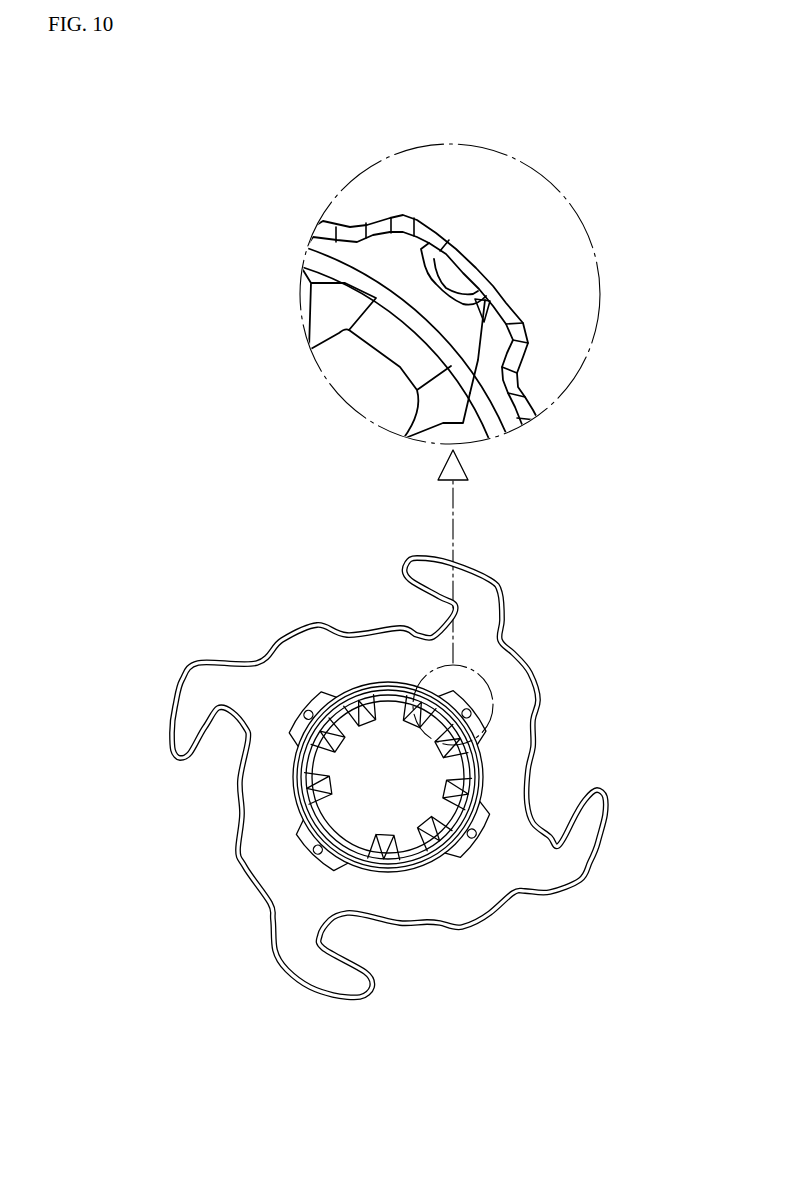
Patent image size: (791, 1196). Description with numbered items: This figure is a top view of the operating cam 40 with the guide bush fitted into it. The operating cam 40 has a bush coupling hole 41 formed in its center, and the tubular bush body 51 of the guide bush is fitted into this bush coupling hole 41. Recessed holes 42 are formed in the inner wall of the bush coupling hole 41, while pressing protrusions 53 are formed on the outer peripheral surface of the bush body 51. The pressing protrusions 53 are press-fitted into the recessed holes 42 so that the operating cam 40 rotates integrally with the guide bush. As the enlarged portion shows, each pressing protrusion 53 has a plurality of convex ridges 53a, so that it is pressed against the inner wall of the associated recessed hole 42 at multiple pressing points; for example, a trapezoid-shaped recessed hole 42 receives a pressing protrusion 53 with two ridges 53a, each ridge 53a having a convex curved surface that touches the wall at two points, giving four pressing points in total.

The operating cam 40 is at (278, 867).
The bush coupling hole 41 is at (380, 683).
The recessed holes 42 is at (297, 722).
The bush body 51 is at (407, 850).
The pressing protrusions 53 is at (477, 837).
The convex ridges 53a is at (421, 251).